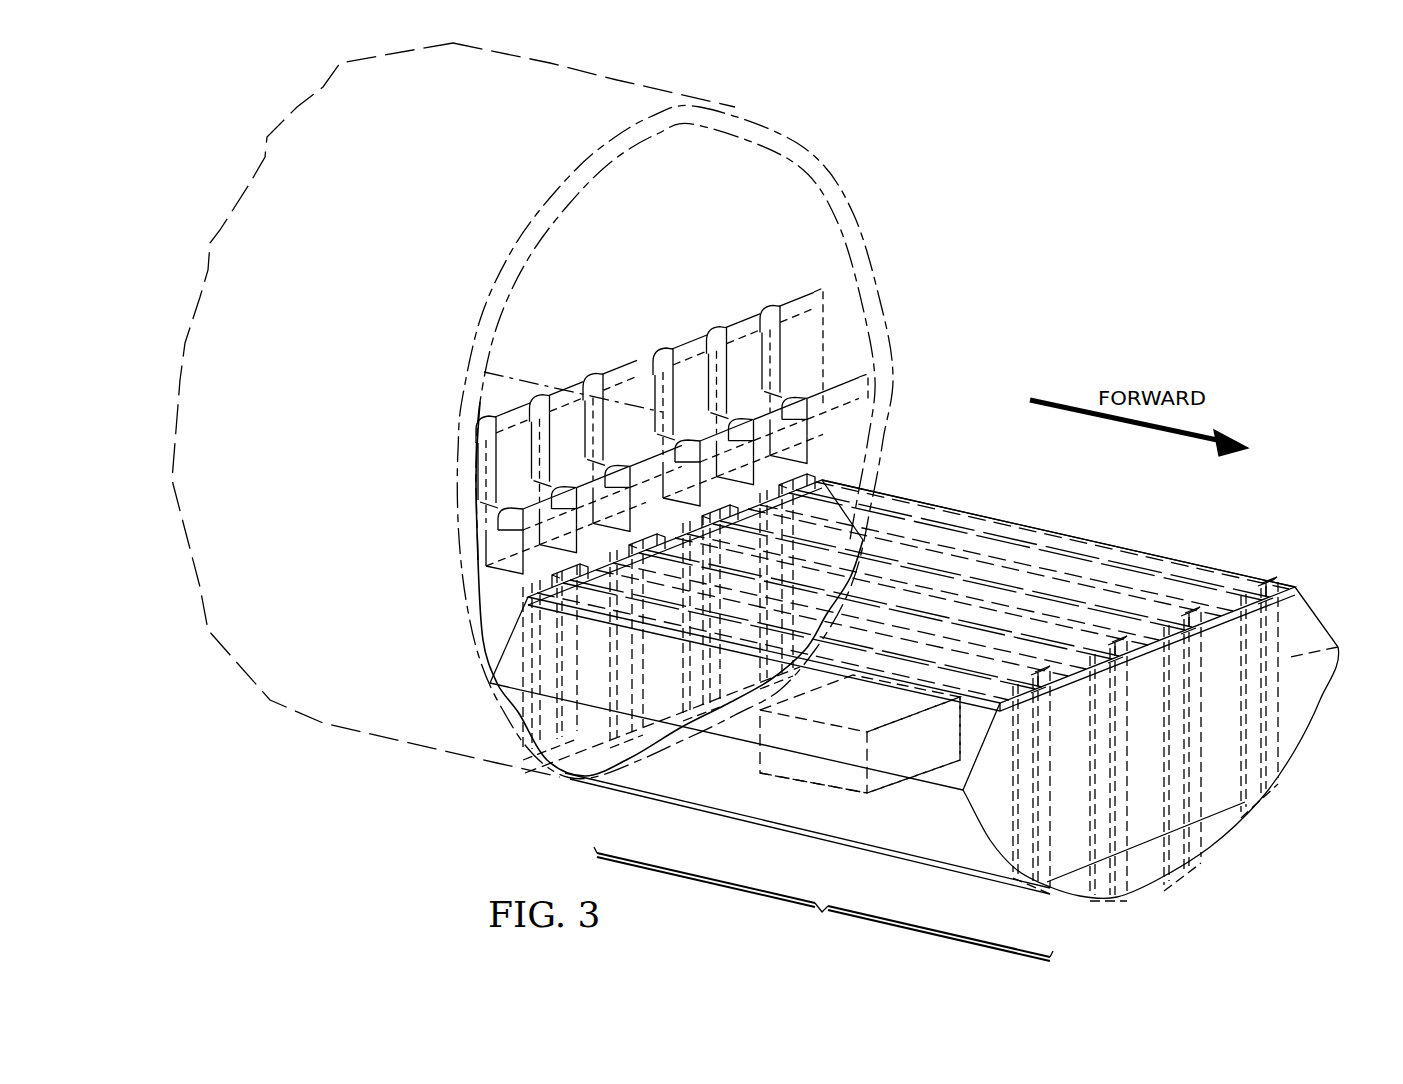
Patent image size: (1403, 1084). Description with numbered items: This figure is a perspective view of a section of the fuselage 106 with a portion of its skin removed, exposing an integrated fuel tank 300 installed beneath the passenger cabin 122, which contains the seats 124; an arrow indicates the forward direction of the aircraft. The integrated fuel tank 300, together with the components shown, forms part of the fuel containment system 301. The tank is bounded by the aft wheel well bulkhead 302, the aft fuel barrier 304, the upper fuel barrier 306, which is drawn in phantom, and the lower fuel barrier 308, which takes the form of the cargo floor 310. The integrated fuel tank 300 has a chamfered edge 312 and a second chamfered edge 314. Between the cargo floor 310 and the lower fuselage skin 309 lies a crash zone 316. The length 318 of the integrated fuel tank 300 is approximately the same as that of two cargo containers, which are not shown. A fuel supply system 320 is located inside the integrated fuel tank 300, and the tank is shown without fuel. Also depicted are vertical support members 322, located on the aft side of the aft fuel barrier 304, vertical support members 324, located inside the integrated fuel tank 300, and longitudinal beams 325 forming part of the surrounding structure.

The fuselage 106 is at (871, 136).
The passenger cabin 122 is at (740, 236).
The seats 124 is at (574, 358).
The integrated fuel tank 300 is at (1282, 580).
The fuel containment system 301 is at (1146, 528).
The aft wheel well bulkhead 302 is at (1313, 687).
The aft fuel barrier 304 is at (590, 598).
The upper fuel barrier 306 is at (913, 687).
The lower fuel barrier 308 is at (1137, 842).
The lower fuselage skin 309 is at (697, 812).
The cargo floor 310 is at (960, 722).
The chamfered edge 312 is at (943, 782).
The chamfered edge 314 is at (1003, 550).
The crash zone 316 is at (1235, 818).
The length 318 is at (823, 904).
The fuel supply system 320 is at (807, 790).
The vertical support members 322 is at (518, 730).
The vertical support members 324 is at (1272, 640).
The longitudinal beams 325 is at (910, 537).